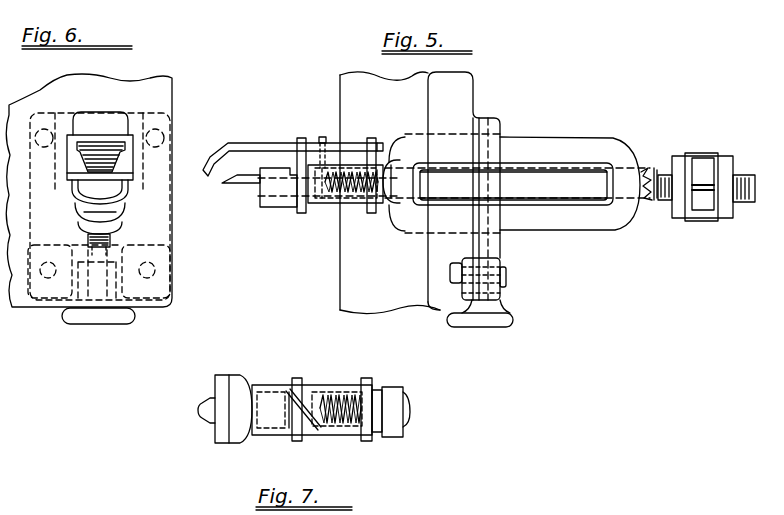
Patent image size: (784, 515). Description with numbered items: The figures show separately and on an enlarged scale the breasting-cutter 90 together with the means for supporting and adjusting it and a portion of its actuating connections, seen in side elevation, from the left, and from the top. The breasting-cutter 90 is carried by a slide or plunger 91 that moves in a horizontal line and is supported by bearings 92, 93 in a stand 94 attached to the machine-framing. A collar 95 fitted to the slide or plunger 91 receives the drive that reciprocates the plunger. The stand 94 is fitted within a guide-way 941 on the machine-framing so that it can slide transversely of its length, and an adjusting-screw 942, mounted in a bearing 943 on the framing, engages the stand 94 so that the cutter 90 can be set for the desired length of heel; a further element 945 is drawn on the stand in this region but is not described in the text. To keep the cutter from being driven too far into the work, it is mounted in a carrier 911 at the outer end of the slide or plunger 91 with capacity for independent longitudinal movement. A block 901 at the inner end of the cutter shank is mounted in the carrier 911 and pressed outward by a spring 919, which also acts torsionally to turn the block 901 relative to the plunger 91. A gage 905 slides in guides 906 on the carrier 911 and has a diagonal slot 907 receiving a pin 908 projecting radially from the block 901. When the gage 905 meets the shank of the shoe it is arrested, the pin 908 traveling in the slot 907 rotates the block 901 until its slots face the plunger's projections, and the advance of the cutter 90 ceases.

In FIG. 6, the breasting-cutter 90 is at (130, 165).
In FIG. 5, the breasting-cutter 90 is at (242, 186).
In FIG. 7, the breasting-cutter 90 is at (228, 373).
In FIG. 5, the slide or plunger 91 is at (558, 180).
In FIG. 7, the slide or plunger 91 is at (408, 393).
In FIG. 5, the bearing 92 is at (640, 168).
In FIG. 5, the bearing 93 is at (385, 208).
In FIG. 6, the stand 94 is at (126, 193).
In FIG. 5, the stand 94 is at (622, 230).
In FIG. 5, the collar 95 is at (703, 222).
In FIG. 6, the gage 905 is at (96, 140).
In FIG. 5, the gage 905 is at (246, 141).
In FIG. 7, the gage 905 is at (197, 410).
In FIG. 5, the guides 906 is at (301, 137).
In FIG. 7, the guides 906 is at (297, 443).
In FIG. 7, the diagonal slot 907 is at (292, 393).
In FIG. 5, the pin 908 is at (325, 136).
In FIG. 7, the pin 908 is at (317, 434).
In FIG. 5, the block 901 is at (322, 195).
In FIG. 7, the block 901 is at (318, 393).
In FIG. 5, the carrier 911 is at (328, 205).
In FIG. 5, the spring 919 is at (356, 197).
In FIG. 7, the spring 919 is at (340, 400).
In FIG. 6, the guide-way 941 is at (120, 250).
In FIG. 5, the guide-way 941 is at (503, 118).
In FIG. 6, the adjusting-screw 942 is at (87, 243).
In FIG. 5, the adjusting-screw 942 is at (516, 320).
In FIG. 6, the bearing for adjusting-screw 943 is at (118, 270).
In FIG. 5, the clamp nut 945 is at (493, 276).